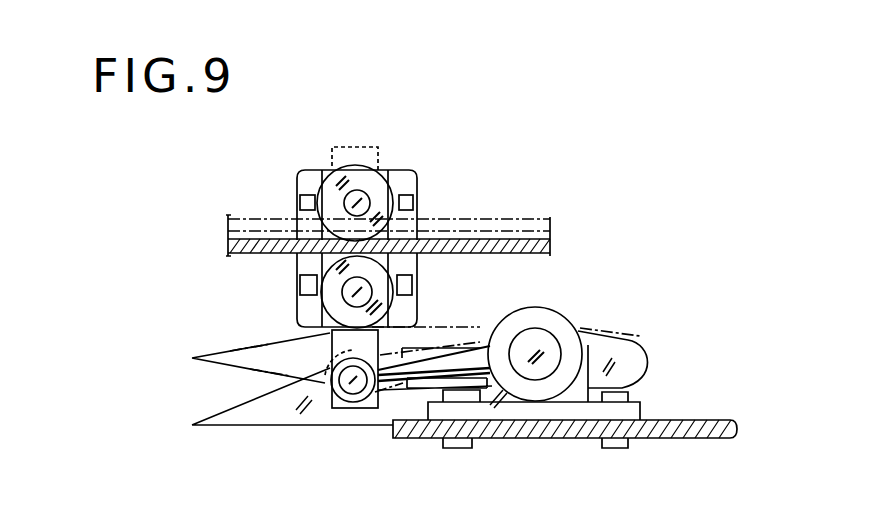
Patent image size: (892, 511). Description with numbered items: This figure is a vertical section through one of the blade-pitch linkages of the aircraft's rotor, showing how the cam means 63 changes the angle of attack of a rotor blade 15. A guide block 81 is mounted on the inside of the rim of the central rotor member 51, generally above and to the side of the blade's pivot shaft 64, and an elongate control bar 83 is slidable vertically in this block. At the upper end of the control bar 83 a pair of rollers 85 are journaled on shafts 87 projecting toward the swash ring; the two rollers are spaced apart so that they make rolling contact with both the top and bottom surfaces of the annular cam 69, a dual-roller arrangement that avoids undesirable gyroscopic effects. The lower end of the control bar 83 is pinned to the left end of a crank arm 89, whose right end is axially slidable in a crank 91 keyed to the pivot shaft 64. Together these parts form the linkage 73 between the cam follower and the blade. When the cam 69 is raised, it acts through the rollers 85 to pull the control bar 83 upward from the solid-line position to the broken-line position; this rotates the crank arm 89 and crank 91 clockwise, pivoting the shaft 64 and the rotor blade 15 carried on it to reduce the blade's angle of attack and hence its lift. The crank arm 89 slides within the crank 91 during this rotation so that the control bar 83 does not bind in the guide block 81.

The rotor blade 15 is at (650, 360).
The central rotor member 51 is at (520, 430).
The circular cam means 63 is at (218, 232).
The pivot shaft 64 is at (548, 368).
The annular cam 69 is at (245, 254).
The linkage 73 is at (218, 340).
The guide block 81 is at (410, 180).
The control bar 83 is at (337, 410).
The roller 85 is at (338, 183).
The shaft 87 is at (370, 200).
The crank arm 89 is at (323, 383).
The crank 91 is at (528, 332).